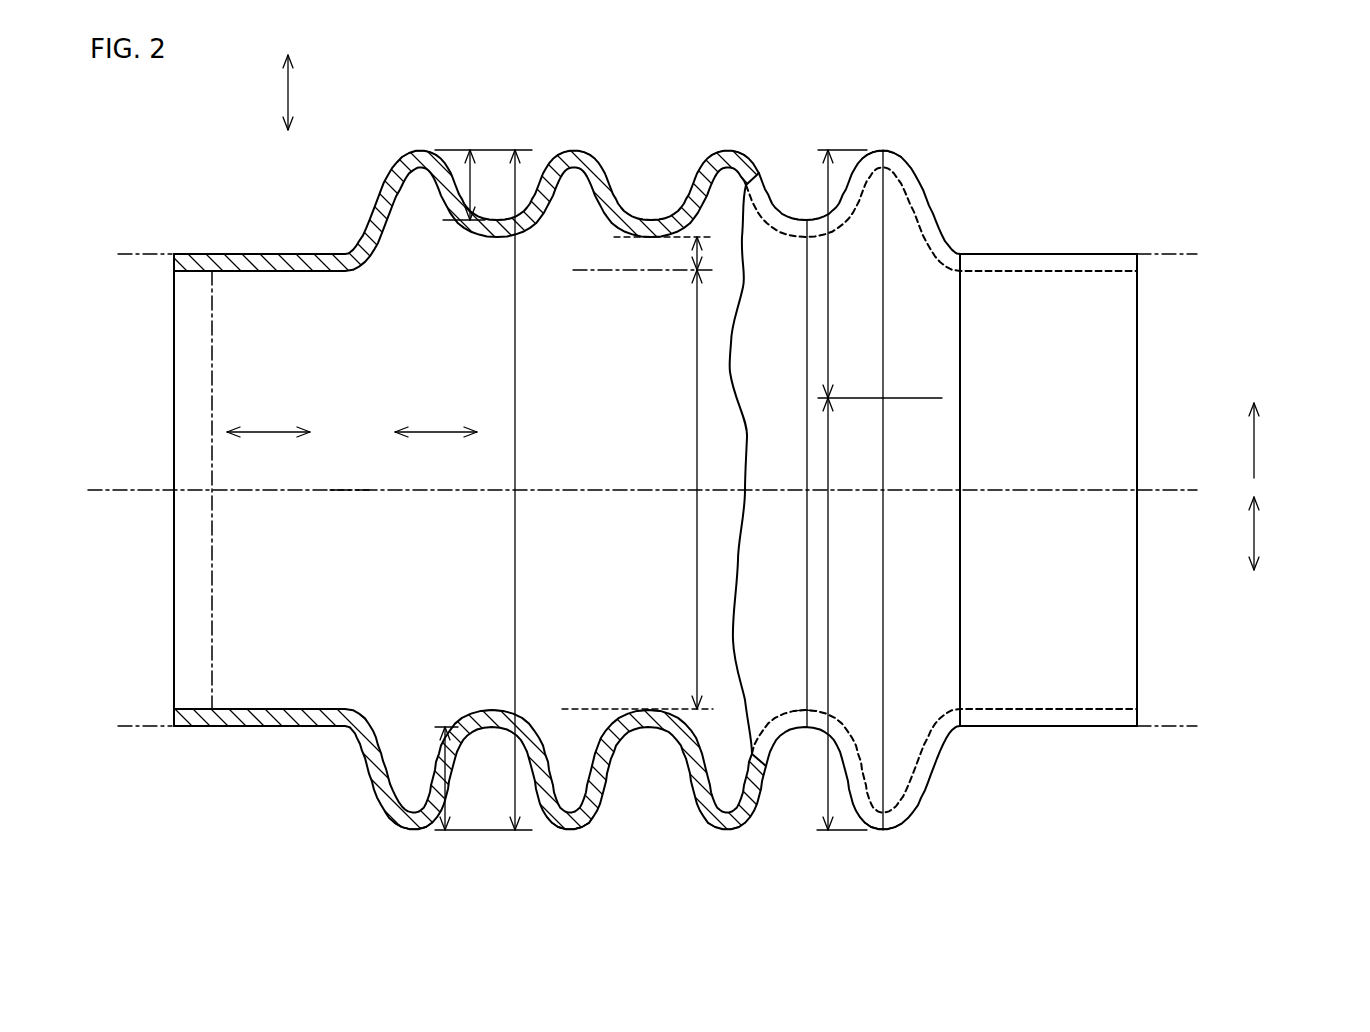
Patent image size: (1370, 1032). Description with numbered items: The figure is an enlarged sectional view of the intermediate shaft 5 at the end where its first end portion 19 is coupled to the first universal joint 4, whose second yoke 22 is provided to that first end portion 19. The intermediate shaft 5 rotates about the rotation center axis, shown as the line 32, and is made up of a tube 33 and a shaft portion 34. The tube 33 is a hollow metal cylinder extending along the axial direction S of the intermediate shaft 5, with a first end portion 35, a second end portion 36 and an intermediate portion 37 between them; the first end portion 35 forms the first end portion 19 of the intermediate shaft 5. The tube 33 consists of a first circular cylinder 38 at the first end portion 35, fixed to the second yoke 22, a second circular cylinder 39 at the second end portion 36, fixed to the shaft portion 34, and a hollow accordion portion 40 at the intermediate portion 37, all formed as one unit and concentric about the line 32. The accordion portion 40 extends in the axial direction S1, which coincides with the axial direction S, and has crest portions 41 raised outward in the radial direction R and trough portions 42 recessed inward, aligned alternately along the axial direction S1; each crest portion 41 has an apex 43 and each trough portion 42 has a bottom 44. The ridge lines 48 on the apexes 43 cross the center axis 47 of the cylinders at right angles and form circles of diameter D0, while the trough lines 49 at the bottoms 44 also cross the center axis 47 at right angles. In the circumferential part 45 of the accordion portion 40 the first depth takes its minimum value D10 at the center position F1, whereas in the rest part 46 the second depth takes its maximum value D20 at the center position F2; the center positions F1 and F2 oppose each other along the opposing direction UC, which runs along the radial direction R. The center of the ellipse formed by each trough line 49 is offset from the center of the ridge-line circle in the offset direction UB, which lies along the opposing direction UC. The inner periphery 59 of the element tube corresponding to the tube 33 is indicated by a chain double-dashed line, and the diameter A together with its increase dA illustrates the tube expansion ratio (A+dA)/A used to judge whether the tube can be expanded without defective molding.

The intermediate shaft 5 is at (160, 194).
The first universal joint 4 is at (1186, 239).
The first end portion 19 is at (1085, 252).
The second yoke 22 is at (1150, 252).
The line 32 is at (1165, 488).
The tube 33 is at (227, 239).
The shaft portion 34 is at (128, 252).
The first end portion 35 is at (1140, 727).
The second end portion 36 is at (172, 727).
The intermediate portion 37 is at (580, 831).
The first circular cylinder 38 is at (1025, 252).
The second circular cylinder 39 is at (300, 252).
The accordion portion 40 is at (427, 842).
The crest portions 41 is at (425, 135).
The trough portions 42 is at (502, 205).
The apex 43 is at (412, 832).
The bottom 44 is at (494, 728).
The part 45 is at (829, 275).
The rest part 46 is at (829, 530).
The center axis 47 is at (345, 488).
The ridge lines 48 is at (884, 585).
The trough lines 49 is at (806, 578).
The inner periphery 59 is at (578, 708).
The center position F1 is at (880, 148).
The center position F2 is at (885, 831).
The diameter D0 is at (516, 402).
The minimum value D10 is at (462, 195).
The maximum value D20 is at (440, 770).
The diameter A is at (697, 548).
The diameter increase dA is at (697, 258).
The axial direction S is at (272, 430).
The axial direction S1 is at (407, 430).
The radial direction R is at (288, 92).
The offset direction UB is at (1254, 450).
The opposing direction UC is at (1254, 533).